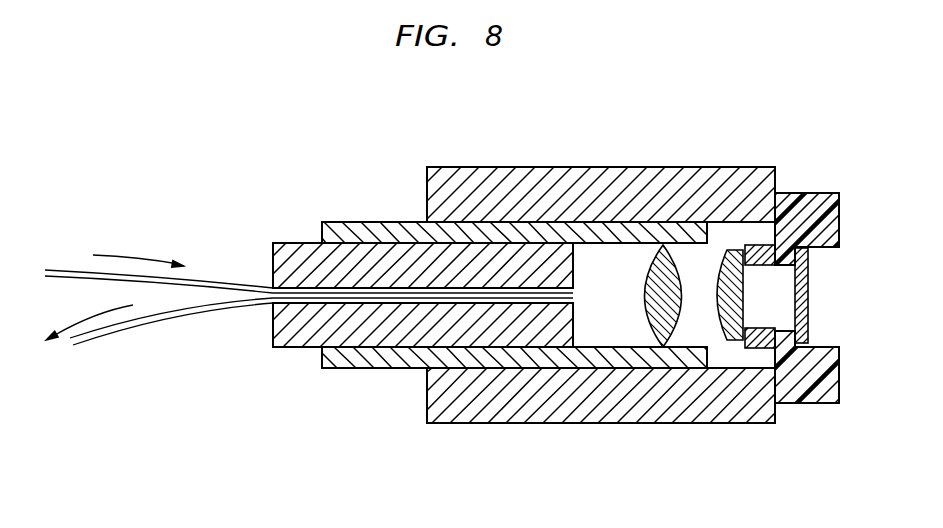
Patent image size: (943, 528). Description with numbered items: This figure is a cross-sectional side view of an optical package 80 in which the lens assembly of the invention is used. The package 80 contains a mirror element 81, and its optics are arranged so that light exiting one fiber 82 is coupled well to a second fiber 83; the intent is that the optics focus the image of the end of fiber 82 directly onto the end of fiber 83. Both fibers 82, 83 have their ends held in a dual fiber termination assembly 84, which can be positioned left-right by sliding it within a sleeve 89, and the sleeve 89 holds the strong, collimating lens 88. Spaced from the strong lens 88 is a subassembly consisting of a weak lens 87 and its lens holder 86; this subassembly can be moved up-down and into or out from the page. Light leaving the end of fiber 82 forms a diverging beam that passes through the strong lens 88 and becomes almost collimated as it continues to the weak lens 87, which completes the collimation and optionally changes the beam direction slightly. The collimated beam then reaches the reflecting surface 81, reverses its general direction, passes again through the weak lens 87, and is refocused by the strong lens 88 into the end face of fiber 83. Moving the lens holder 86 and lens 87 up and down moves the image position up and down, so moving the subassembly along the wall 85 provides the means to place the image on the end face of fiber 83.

The optical package 80 is at (686, 510).
The mirror element 81 is at (808, 290).
The fiber 82 is at (73, 273).
The fiber 83 is at (113, 338).
The dual fiber termination assembly 84 is at (572, 287).
The wall 85 is at (812, 403).
The lens holder 86 is at (765, 247).
The weak lens 87 is at (720, 272).
The strong lens 88 is at (650, 272).
The sleeve 89 is at (343, 370).